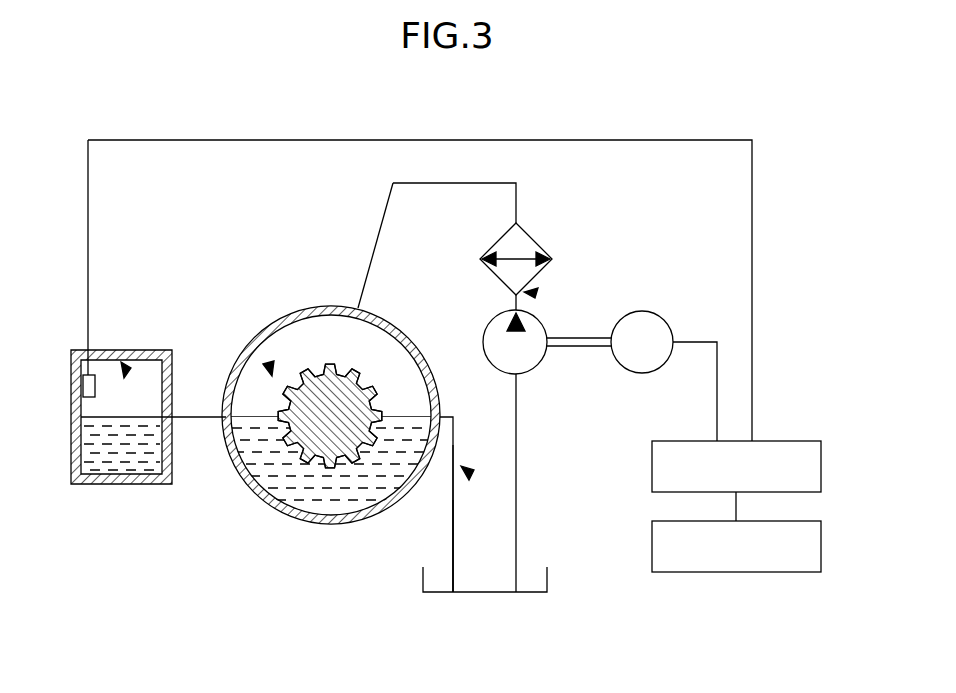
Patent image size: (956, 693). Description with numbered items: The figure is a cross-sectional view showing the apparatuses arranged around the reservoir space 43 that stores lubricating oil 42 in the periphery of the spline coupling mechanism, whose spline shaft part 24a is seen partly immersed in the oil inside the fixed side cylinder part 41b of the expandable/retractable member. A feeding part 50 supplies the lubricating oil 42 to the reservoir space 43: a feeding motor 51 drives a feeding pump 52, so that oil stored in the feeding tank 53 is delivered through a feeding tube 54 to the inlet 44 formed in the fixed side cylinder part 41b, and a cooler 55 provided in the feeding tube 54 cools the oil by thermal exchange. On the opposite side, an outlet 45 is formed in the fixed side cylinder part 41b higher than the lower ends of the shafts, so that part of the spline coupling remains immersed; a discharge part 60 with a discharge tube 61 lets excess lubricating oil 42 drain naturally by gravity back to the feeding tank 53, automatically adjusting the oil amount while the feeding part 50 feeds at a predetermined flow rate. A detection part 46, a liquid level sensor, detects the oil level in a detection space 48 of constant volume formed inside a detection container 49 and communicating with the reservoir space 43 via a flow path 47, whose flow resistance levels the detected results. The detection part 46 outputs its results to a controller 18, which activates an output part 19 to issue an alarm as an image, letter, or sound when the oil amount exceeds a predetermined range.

The controller 18 is at (822, 468).
The output part 19 is at (822, 548).
The spline shaft part 24a is at (329, 382).
The fixed side cylinder part 41b is at (283, 322).
The lubricating oil 42 is at (333, 505).
The reservoir space 43 is at (266, 368).
The inlet 44 is at (344, 306).
The outlet 45 is at (440, 401).
The detection part 46 is at (83, 385).
The flow path 47 is at (197, 410).
The detection space 48 is at (126, 372).
The detection container 49 is at (76, 449).
The feeding part 50 is at (537, 292).
The feeding motor 51 is at (644, 313).
The feeding pump 52 is at (530, 364).
The feeding tank 53 is at (481, 595).
The feeding tube 54 is at (447, 185).
The cooler 55 is at (532, 244).
The discharge part 60 is at (470, 472).
The discharge tube 61 is at (453, 536).